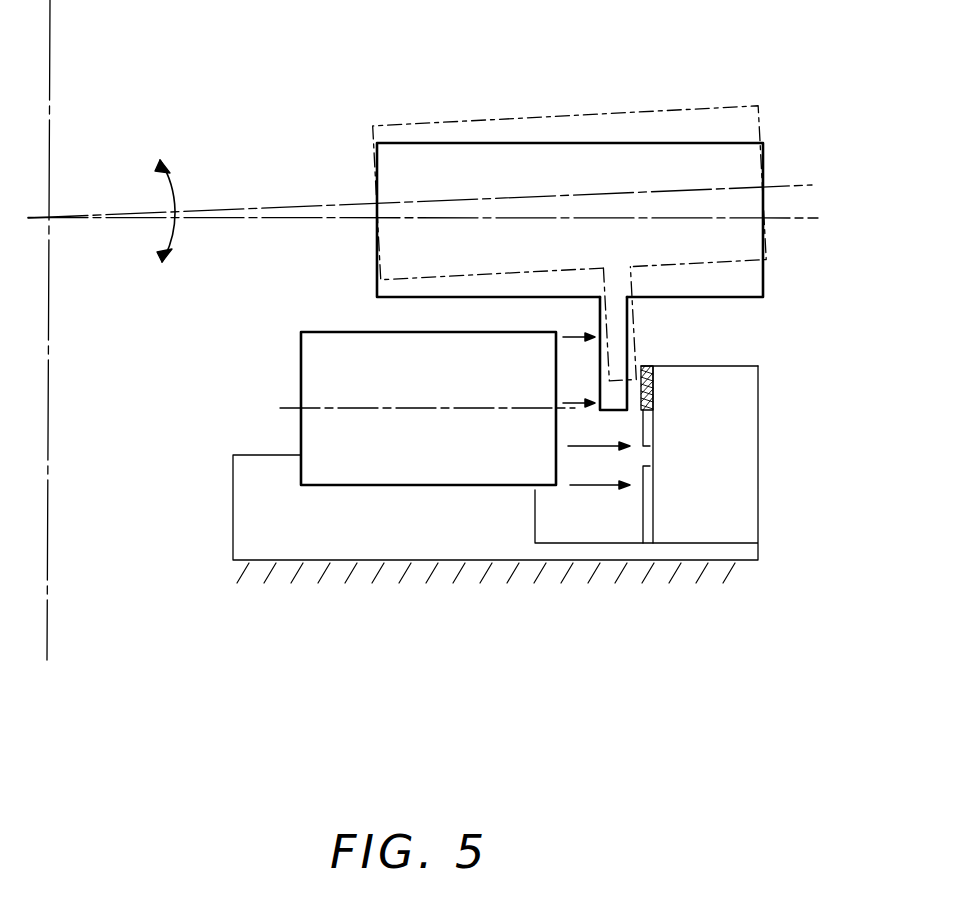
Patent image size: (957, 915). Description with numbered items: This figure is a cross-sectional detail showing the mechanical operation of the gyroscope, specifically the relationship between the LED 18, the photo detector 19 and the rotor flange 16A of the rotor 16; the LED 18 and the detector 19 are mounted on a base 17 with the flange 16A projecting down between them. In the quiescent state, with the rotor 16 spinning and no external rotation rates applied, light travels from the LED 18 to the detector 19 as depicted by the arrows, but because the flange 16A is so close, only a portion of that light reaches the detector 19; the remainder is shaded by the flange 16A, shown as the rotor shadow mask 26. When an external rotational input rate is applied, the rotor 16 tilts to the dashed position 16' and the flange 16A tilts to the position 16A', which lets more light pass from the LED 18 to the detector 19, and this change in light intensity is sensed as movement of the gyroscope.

The rotor 16 is at (611, 220).
The tilted rotor position 16' is at (605, 179).
The rotor flange 16A is at (653, 353).
The tilted flange position 16A' is at (659, 324).
The LED 18 is at (301, 359).
The photo detector 19 is at (727, 429).
The base 17 is at (758, 552).
The rotor shadow mask 26 is at (651, 370).